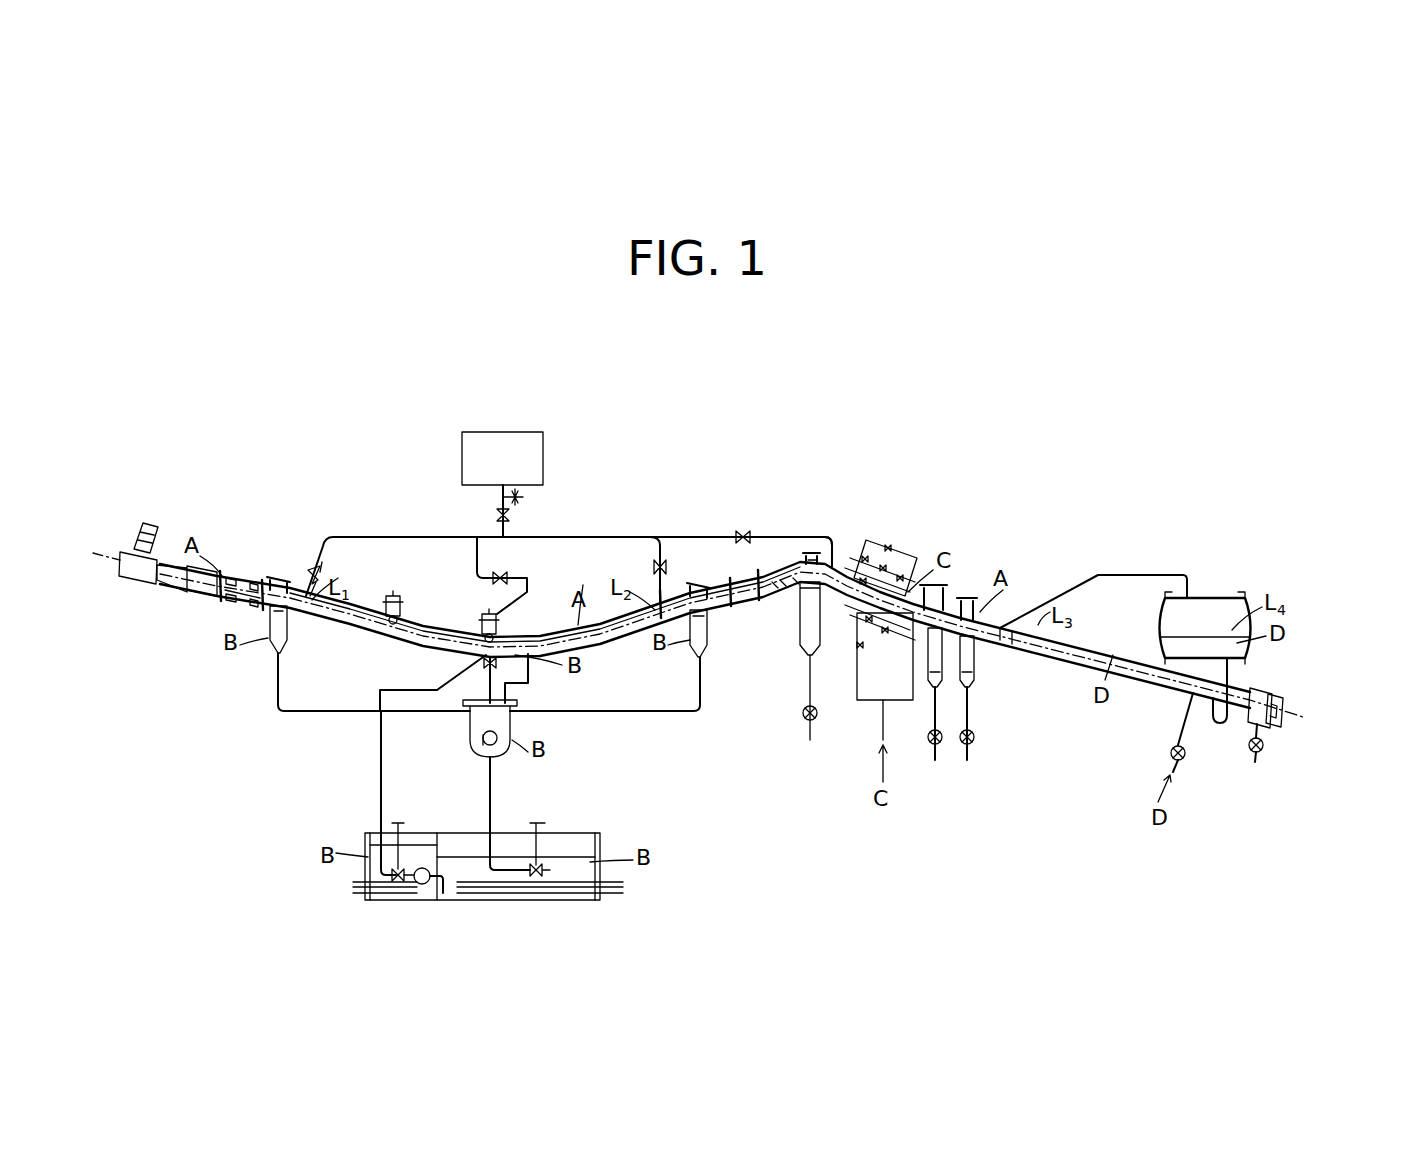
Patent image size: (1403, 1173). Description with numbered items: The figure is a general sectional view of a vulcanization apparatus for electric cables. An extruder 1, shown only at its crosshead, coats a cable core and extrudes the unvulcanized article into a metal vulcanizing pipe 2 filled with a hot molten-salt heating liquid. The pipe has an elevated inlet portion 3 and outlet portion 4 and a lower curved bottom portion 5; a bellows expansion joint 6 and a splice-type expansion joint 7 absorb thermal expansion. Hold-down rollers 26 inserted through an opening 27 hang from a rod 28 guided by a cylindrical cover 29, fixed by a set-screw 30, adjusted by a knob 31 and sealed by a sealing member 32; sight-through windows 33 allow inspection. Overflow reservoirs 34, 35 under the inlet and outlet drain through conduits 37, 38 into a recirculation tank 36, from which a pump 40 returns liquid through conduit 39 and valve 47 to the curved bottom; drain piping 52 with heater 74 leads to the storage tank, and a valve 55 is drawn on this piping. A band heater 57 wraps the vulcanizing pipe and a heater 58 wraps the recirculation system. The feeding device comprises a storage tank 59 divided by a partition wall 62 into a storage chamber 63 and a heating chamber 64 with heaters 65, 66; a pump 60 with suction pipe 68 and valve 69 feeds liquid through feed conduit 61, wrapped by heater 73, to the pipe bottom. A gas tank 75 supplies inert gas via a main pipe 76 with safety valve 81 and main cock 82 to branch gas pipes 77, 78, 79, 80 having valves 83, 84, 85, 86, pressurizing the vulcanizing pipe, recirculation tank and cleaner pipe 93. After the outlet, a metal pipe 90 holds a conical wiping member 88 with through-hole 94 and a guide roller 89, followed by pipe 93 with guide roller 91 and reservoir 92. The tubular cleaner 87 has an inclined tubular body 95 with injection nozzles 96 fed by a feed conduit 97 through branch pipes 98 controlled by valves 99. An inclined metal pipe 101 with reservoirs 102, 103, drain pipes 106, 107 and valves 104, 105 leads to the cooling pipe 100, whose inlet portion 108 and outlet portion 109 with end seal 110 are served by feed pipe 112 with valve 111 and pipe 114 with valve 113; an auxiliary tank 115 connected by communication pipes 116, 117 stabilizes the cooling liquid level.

The extruder 1 is at (128, 553).
The vulcanizing pipe 2 is at (449, 623).
The inlet portion 3 is at (258, 615).
The outlet portion 4 is at (745, 590).
The curved bottom portion 5 is at (500, 660).
The expansion joint 6 is at (236, 578).
The expansion joint 7 is at (775, 588).
The hold-down rollers 26 is at (535, 575).
The opening 27 is at (385, 600).
The metal rod 28 is at (400, 598).
The cylindrical cover 29 is at (390, 597).
The set-screw 30 is at (401, 605).
The knob 31 is at (395, 597).
The heat resisting sealing member 32 is at (403, 615).
The sight-through windows 33 is at (276, 578).
The overflow reservoir 34 is at (272, 660).
The overflow reservoir 35 is at (694, 650).
The recirculation tank 36 is at (505, 752).
The conduit 37 is at (300, 714).
The conduit 38 is at (630, 712).
The conduit 39 is at (470, 668).
The pump 40 is at (485, 745).
The valve 47 is at (508, 682).
The draining flow passage piping 52 is at (494, 812).
The valve 55 is at (545, 823).
The heater 57 is at (333, 616).
The heater 58 is at (270, 655).
The storage tank 59 is at (603, 838).
The pump 60 is at (424, 885).
The feed conduit 61 is at (378, 765).
The partition wall 62 is at (438, 834).
The storage chamber 63 is at (575, 835).
The heating chamber 64 is at (412, 835).
The heater 65 is at (540, 895).
The heater 66 is at (412, 895).
The suction pipe 68 is at (445, 890).
The valve 69 is at (403, 817).
The heater 73 is at (396, 690).
The heater 74 is at (532, 823).
The gas tank 75 is at (487, 445).
The main pipe 76 is at (504, 500).
The gas pipe 77 is at (314, 562).
The gas pipe 78 is at (652, 536).
The gas pipe 79 is at (475, 565).
The gas pipe 80 is at (660, 545).
The safety valve 81 is at (522, 495).
The main cock 82 is at (510, 515).
The valve 83 is at (310, 575).
The valve 84 is at (666, 565).
The valve 85 is at (503, 572).
The valve 86 is at (743, 530).
The tubular cleaner 87 is at (855, 620).
The wiping member 88 is at (822, 540).
The guide roller 89 is at (784, 592).
The metal pipe 90 is at (805, 560).
The guide roller 91 is at (800, 584).
The reservoir 92 is at (803, 635).
The metal pipe 93 is at (848, 566).
The through-hole 94 is at (785, 565).
The tubular body 95 is at (858, 565).
The cleaning liquid injection nozzles 96 is at (903, 572).
The cleaning liquid feed conduit 97 is at (912, 545).
The branch pipes 98 is at (866, 556).
The valve 99 is at (889, 548).
The cooling pipe 100 is at (1114, 645).
The metal pipe 101 is at (940, 585).
The first reservoir 102 is at (927, 680).
The second reservoir 103 is at (975, 690).
The valve 104 is at (934, 745).
The valve 105 is at (968, 745).
The drain pipe 106 is at (934, 728).
The drain pipe 107 is at (970, 728).
The inlet portion 108 is at (1005, 640).
The outlet portion 109 is at (1258, 692).
The outlet 110 is at (1278, 698).
The valve 111 is at (1170, 758).
The feed pipe 112 is at (1182, 730).
The valve 113 is at (1256, 760).
The pipe 114 is at (1262, 745).
The auxiliary tank 115 is at (1210, 597).
The communication pipe 116 is at (1077, 583).
The communication pipe 117 is at (1220, 725).